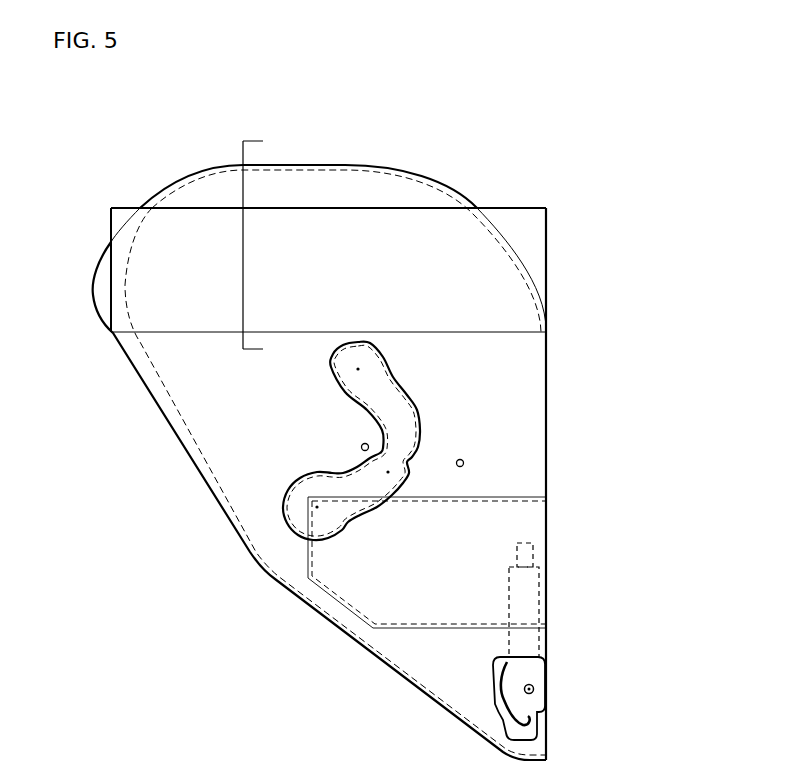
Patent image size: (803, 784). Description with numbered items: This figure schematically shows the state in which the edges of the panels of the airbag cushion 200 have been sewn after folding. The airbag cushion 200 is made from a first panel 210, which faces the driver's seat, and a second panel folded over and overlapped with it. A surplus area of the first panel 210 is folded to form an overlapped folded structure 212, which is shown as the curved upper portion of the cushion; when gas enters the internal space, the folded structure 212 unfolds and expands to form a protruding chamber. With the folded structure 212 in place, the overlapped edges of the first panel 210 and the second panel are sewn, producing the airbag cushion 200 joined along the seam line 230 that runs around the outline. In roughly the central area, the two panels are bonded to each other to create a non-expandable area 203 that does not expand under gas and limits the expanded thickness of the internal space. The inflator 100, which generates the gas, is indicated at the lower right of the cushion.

The airbag cushion 200 is at (131, 103).
The folded structure 212 is at (443, 230).
The seam line 230 is at (158, 390).
The first panel 210 is at (222, 453).
The non-expandable area 203 is at (398, 412).
The inflator 100 is at (527, 603).